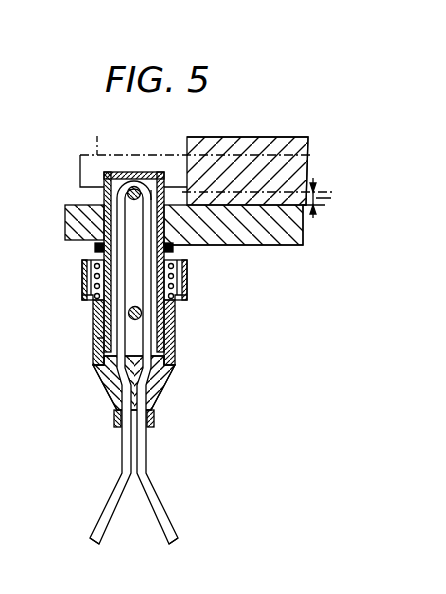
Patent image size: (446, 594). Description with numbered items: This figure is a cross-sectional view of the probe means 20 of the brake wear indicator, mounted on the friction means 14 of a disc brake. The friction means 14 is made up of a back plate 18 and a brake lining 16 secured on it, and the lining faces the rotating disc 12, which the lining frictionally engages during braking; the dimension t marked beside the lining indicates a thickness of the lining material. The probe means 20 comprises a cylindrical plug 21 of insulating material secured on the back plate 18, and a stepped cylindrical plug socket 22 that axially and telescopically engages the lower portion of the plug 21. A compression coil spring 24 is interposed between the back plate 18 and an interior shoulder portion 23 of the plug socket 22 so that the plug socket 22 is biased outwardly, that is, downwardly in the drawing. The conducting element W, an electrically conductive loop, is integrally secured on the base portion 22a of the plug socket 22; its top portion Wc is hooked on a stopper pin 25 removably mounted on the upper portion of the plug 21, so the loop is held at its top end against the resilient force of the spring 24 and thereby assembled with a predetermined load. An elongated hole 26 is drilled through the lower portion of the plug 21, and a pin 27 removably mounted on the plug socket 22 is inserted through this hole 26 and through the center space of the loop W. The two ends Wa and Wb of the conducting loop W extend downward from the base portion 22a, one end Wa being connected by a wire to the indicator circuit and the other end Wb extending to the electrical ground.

The disc 12 is at (100, 127).
The friction means 14 is at (300, 173).
The brake lining 16 is at (296, 147).
The back plate 18 is at (261, 228).
The thickness t is at (322, 198).
The probe means 20 is at (103, 200).
The cylindrical plug 21 is at (102, 170).
The plug socket 22 is at (93, 325).
The base portion 22a is at (158, 392).
The interior shoulder portion 23 is at (93, 297).
The compression coil spring 24 is at (95, 247).
The stopper pin 25 is at (136, 185).
The elongated hole 26 is at (97, 338).
The pin 27 is at (128, 313).
The conducting element W is at (148, 315).
The one end of conducting loop Wa is at (166, 518).
The other end of conducting loop Wb is at (112, 510).
The top portion of conducting loop Wc is at (151, 190).